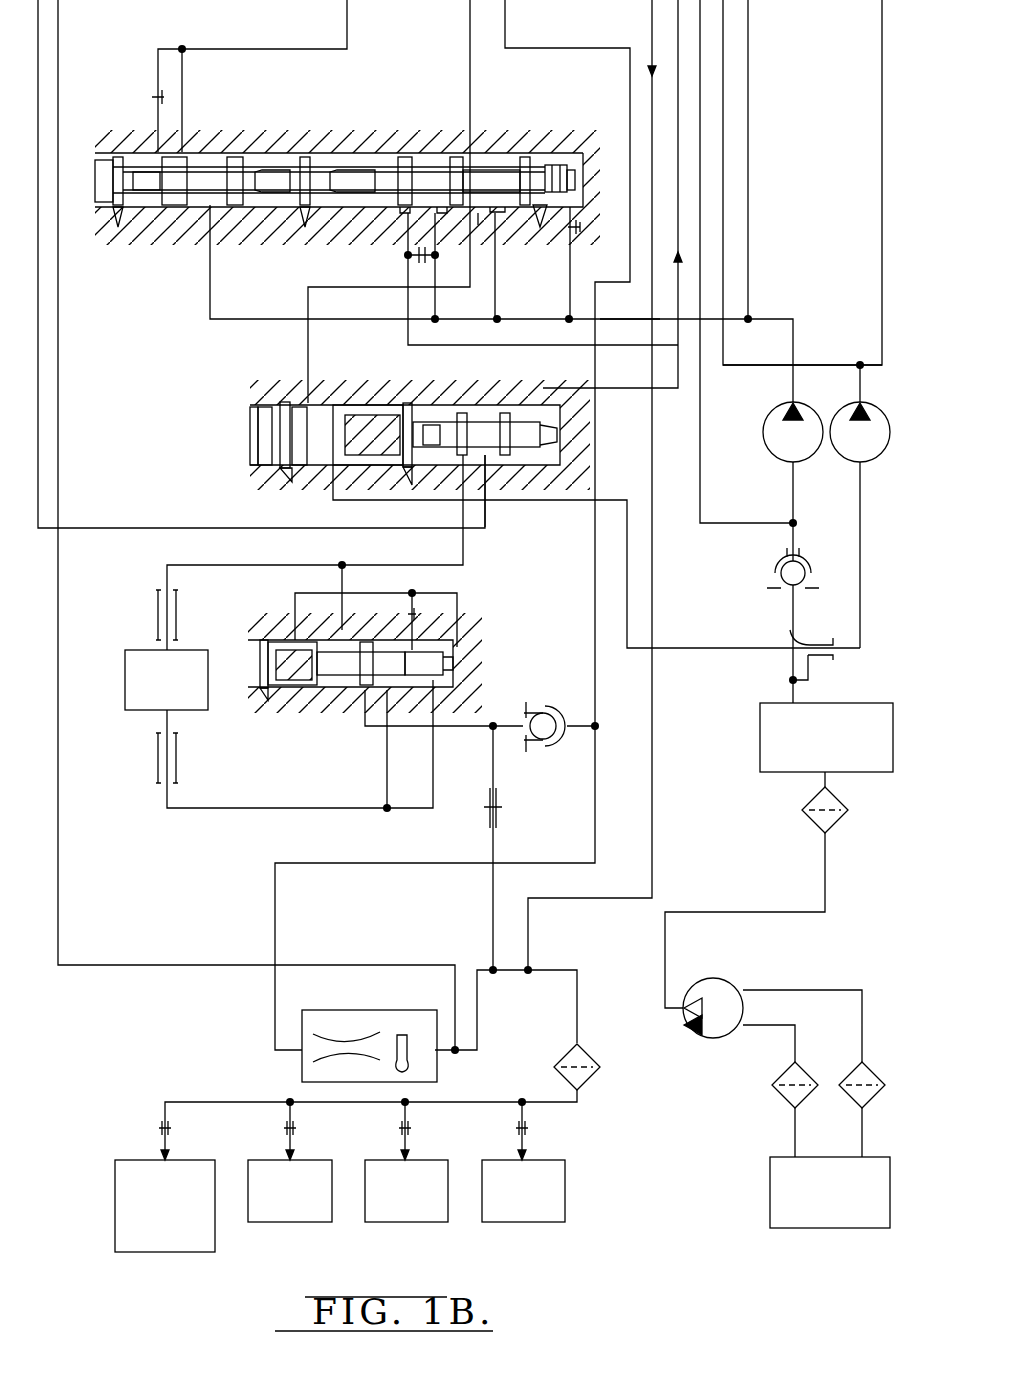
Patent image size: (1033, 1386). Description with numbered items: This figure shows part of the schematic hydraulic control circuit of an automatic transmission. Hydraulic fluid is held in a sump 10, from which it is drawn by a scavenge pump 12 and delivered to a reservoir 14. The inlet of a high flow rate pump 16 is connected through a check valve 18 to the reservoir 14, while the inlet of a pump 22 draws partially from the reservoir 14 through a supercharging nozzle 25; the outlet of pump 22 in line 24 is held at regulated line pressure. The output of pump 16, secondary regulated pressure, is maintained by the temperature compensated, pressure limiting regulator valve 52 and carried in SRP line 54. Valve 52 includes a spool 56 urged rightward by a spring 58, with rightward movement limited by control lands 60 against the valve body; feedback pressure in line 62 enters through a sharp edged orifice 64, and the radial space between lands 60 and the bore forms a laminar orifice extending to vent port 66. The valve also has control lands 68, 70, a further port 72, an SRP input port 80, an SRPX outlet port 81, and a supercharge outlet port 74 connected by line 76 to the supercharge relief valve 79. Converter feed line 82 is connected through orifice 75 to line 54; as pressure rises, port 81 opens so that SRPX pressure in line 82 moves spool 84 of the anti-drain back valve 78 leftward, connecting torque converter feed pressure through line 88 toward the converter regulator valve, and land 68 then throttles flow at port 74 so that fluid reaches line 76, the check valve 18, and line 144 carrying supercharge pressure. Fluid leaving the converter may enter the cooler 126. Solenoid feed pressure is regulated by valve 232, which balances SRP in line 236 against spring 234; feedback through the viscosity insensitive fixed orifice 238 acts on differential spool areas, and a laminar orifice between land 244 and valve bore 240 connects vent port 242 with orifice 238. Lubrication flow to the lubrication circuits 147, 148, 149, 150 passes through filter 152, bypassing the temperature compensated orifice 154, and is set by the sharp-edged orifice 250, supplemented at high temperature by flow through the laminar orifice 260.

The sump 10 is at (778, 1177).
The scavenge pump 12 is at (723, 995).
The reservoir 14 is at (770, 768).
The high flow rate pump 16 is at (776, 448).
The check valve 18 is at (785, 573).
The pump 22 is at (870, 452).
The line 24 is at (790, 656).
The supercharging nozzle 25 is at (830, 365).
The SRP regulator valve 52 is at (445, 130).
The SRP line 54 is at (618, 322).
The spool 56 is at (420, 175).
The spring 58 is at (330, 158).
The control lands 60 is at (558, 172).
The SRP feedback line 62 is at (572, 266).
The sharp edged orifice 64 is at (580, 226).
The vent port 66 is at (540, 215).
The control land 68 is at (472, 165).
The control land 70 is at (408, 180).
The port 72 is at (497, 208).
The supercharge outlet port 74 is at (478, 218).
The orifice 75 is at (415, 258).
The line 76 is at (318, 287).
The anti-drain back valve 78 is at (458, 412).
The supercharge relief valve 79 is at (365, 400).
The SRP input port 80 is at (440, 213).
The SRPX outlet port 81 is at (405, 213).
The line 82 is at (408, 302).
The spool 84 is at (490, 440).
The line 88 is at (602, 390).
The cooler 126 is at (128, 677).
The line 144 is at (703, 402).
The lubrication circuit 147 is at (560, 1187).
The lubrication circuit 148 is at (405, 1222).
The lubrication circuit 149 is at (262, 1222).
The lubrication circuit 150 is at (115, 1190).
The filter 152 is at (588, 1078).
The temperature compensated orifice 154 is at (430, 1083).
The solenoid feed regulator valve 232 is at (349, 173).
The spring 234 is at (282, 165).
The line 236 is at (282, 49).
The viscosity insensitive fixed orifice 238 is at (155, 95).
The valve bore 240 is at (138, 158).
The vent port 242 is at (115, 222).
The land 244 is at (148, 190).
The sharp-edged orifice 250 is at (302, 1072).
The laminar orifice 260 is at (497, 820).